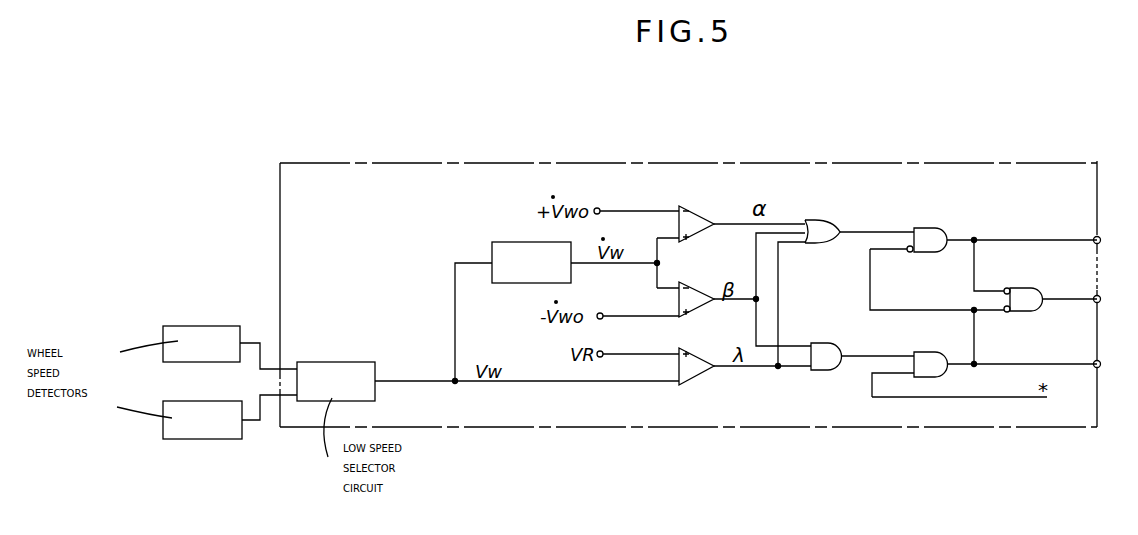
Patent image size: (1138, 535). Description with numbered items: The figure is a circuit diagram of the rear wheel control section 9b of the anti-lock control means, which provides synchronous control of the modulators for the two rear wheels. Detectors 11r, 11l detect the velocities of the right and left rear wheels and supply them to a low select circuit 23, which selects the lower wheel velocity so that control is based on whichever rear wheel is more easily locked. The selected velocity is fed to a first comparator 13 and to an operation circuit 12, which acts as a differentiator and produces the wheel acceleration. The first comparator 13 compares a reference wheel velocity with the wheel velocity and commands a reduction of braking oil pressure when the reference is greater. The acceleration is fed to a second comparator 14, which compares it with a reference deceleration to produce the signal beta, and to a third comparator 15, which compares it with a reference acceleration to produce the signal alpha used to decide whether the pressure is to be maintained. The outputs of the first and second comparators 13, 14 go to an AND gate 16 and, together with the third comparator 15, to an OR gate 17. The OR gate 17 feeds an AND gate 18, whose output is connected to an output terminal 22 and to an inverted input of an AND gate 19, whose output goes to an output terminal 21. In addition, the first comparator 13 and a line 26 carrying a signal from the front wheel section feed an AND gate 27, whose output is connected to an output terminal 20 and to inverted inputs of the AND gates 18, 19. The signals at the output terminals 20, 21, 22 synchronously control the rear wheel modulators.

The rear wheel control section 9b is at (568, 163).
The detector 11r is at (192, 333).
The detector 11l is at (192, 409).
The low select circuit 23 is at (334, 369).
The operation circuit 12 is at (508, 248).
The first comparator 13 is at (697, 357).
The second comparator 14 is at (700, 291).
The third comparator 15 is at (698, 214).
The AND gate 16 is at (823, 346).
The OR gate 17 is at (818, 220).
The AND gate 18 is at (922, 228).
The AND gate 19 is at (1024, 290).
The AND gate 27 is at (929, 356).
The line 26 is at (995, 398).
The output terminal 20 is at (1101, 364).
The output terminal 21 is at (1101, 299).
The output terminal 22 is at (1101, 240).